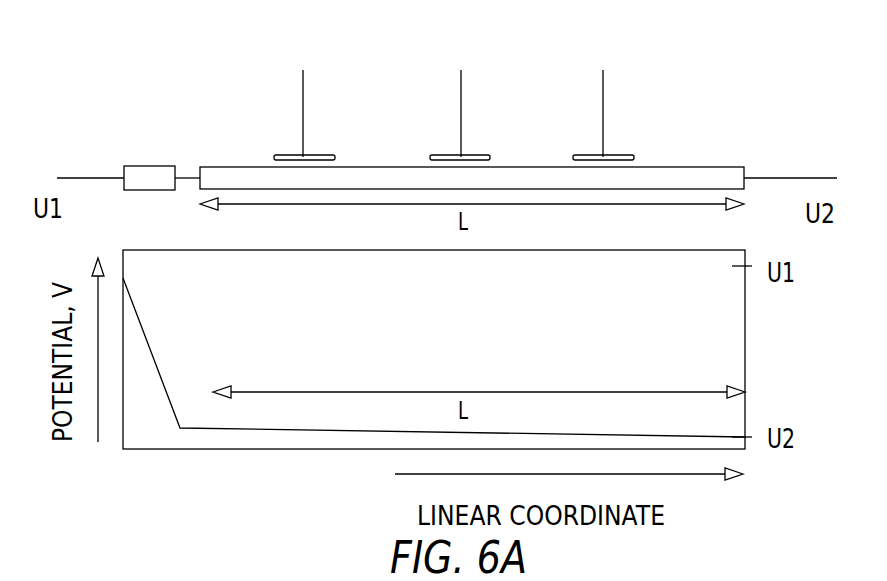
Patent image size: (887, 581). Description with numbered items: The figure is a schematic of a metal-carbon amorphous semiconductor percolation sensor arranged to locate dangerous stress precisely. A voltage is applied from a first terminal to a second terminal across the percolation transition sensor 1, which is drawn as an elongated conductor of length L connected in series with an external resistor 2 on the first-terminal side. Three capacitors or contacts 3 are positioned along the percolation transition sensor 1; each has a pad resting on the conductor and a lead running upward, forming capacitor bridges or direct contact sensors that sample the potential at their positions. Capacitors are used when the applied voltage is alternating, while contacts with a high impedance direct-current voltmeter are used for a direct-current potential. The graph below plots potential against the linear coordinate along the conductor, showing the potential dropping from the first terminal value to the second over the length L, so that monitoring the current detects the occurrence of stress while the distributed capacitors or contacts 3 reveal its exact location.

The percolation transition sensor 1 is at (244, 148).
The external resistor 2 is at (141, 144).
The capacitors or contacts 3 is at (289, 84).